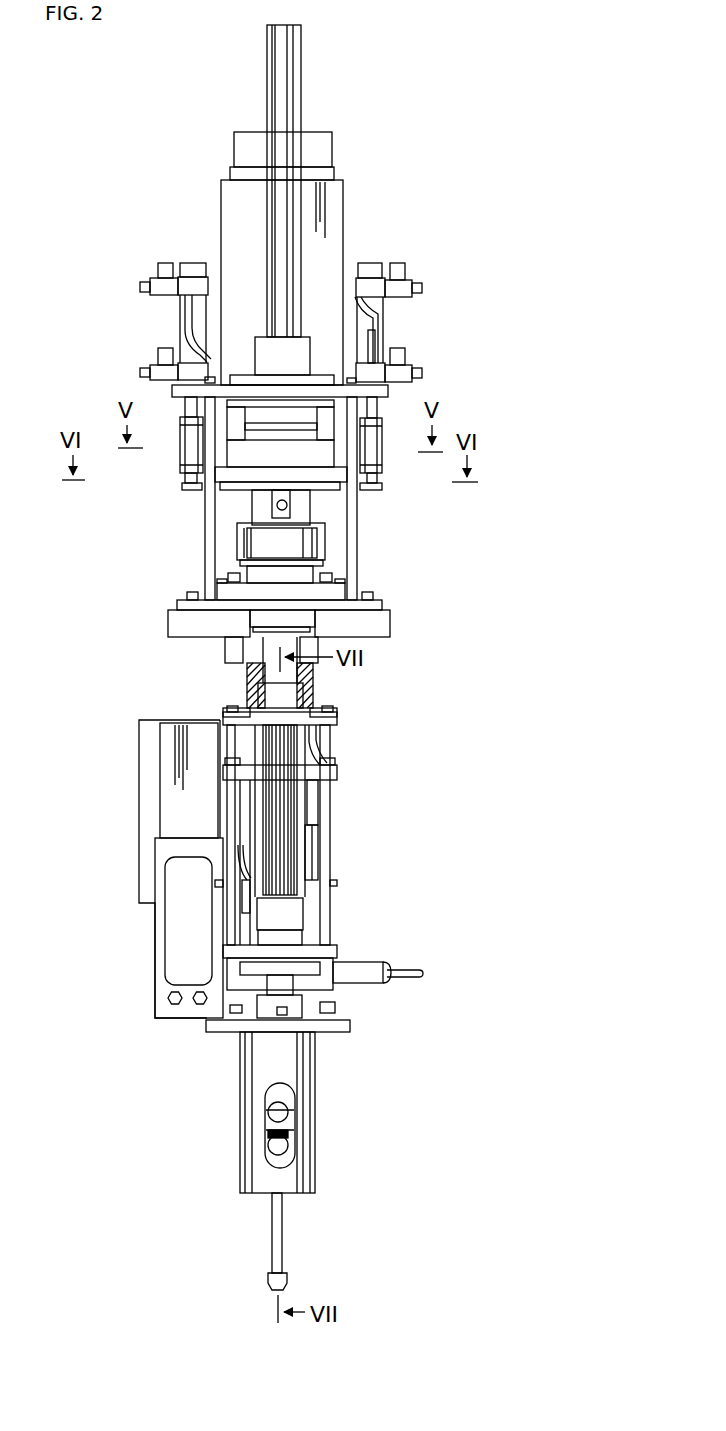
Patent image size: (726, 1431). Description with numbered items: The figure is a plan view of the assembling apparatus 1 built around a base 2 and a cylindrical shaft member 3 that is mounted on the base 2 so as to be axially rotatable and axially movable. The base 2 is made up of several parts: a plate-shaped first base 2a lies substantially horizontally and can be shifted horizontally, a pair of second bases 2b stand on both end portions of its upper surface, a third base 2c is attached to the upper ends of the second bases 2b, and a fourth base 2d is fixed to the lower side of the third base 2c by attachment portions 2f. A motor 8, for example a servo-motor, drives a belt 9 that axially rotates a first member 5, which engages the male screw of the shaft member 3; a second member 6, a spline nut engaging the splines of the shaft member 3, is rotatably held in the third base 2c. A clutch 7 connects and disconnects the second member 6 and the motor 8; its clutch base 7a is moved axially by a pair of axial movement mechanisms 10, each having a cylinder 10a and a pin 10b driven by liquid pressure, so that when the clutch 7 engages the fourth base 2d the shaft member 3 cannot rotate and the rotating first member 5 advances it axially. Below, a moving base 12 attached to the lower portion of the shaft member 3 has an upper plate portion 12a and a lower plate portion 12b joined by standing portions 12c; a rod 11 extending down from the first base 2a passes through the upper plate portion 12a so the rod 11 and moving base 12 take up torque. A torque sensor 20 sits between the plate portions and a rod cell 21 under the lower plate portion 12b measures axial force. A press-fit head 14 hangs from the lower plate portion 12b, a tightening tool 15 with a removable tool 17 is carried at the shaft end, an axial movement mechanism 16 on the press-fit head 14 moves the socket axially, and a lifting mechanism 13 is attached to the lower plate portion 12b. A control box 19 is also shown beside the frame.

The fastening device 1 is at (182, 86).
The base 2 is at (362, 537).
The first base 2a is at (358, 607).
The second bases 2b is at (351, 462).
The third base 2c is at (388, 392).
The fourth base 2d is at (253, 453).
The attachment portions 2f is at (240, 413).
The shaft member 3 is at (283, 71).
The first member 5 is at (343, 580).
The second member 6 is at (268, 362).
The clutch 7 is at (236, 495).
The clutch base 7a is at (233, 478).
The motor 8 is at (247, 208).
The belt 9 is at (300, 545).
The axial movement mechanism 10 is at (380, 304).
The cylinder 10a is at (198, 312).
The pin 10b is at (190, 453).
The rod 11 is at (315, 682).
The moving base 12 is at (344, 837).
The upper plate portion 12a is at (330, 775).
The lower plate portion 12b is at (312, 953).
The standing portion 12c is at (333, 866).
The lifting mechanism 13 is at (357, 1031).
The press-fit head 14 is at (307, 1072).
The tightening tool 15 is at (282, 1120).
The axial movement mechanism 16 is at (368, 968).
The tool 17 is at (282, 1235).
The control box 19 is at (150, 776).
The torque sensor 20 is at (312, 800).
The rod cell 21 is at (315, 978).